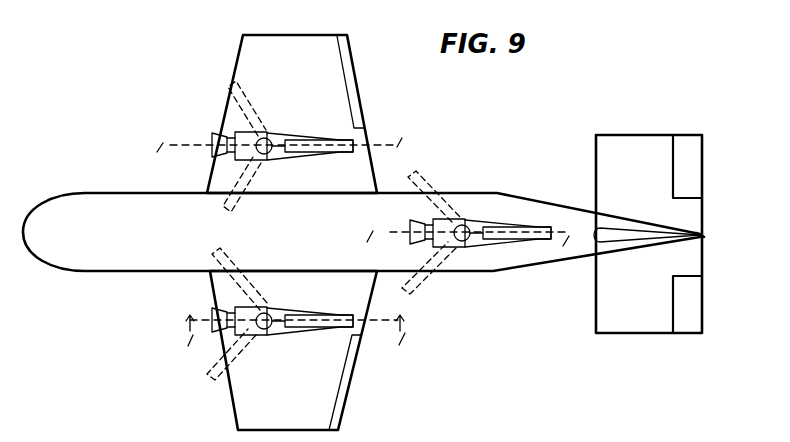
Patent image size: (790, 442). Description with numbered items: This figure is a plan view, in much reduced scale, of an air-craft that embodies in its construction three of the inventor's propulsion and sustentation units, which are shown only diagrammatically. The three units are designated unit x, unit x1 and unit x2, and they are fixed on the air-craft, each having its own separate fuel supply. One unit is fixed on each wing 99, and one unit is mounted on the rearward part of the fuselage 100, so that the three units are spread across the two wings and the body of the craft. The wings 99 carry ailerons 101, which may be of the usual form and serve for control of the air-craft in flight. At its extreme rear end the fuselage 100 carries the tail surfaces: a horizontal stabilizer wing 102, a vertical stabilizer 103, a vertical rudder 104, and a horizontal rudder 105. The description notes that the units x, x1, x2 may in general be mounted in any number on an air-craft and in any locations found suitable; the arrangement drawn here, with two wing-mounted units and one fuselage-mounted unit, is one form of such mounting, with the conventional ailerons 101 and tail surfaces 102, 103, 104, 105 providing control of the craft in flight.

The wing 99 is at (243, 67).
The fuselage 100 is at (497, 193).
The aileron 101 is at (357, 82).
The horizontal stabilizer wing 102 is at (608, 143).
The vertical stabilizer 103 is at (607, 235).
The vertical rudder 104 is at (712, 233).
The horizontal rudder 105 is at (695, 172).
The propulsion and sustentation unit x is at (213, 310).
The propulsion and sustentation unit x1 is at (212, 158).
The propulsion and sustentation unit x2 is at (480, 242).